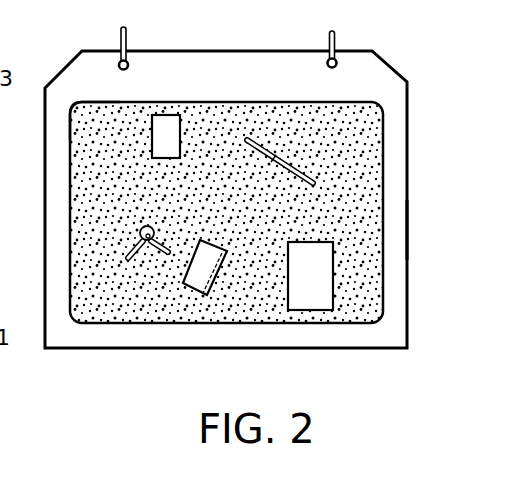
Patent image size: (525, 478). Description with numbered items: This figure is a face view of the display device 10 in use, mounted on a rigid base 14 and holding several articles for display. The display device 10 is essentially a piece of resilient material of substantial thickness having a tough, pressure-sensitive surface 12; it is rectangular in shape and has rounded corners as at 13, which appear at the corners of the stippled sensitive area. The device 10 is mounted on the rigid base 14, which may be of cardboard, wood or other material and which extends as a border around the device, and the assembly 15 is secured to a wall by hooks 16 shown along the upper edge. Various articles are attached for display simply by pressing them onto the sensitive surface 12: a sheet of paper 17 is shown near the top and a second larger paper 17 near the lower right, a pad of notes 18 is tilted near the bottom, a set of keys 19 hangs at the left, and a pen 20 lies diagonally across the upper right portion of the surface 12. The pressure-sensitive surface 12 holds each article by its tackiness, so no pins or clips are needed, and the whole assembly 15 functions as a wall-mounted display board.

The display device 10 is at (387, 194).
The pressure-sensitive surface 12 is at (374, 314).
The rounded corners 13 is at (72, 101).
The rigid base 14 is at (398, 242).
The display assembly 15 is at (402, 67).
The hooks 16 is at (128, 45).
The paper 17 is at (170, 122).
The notes 18 is at (205, 290).
The keys 19 is at (128, 246).
The pen 20 is at (310, 172).